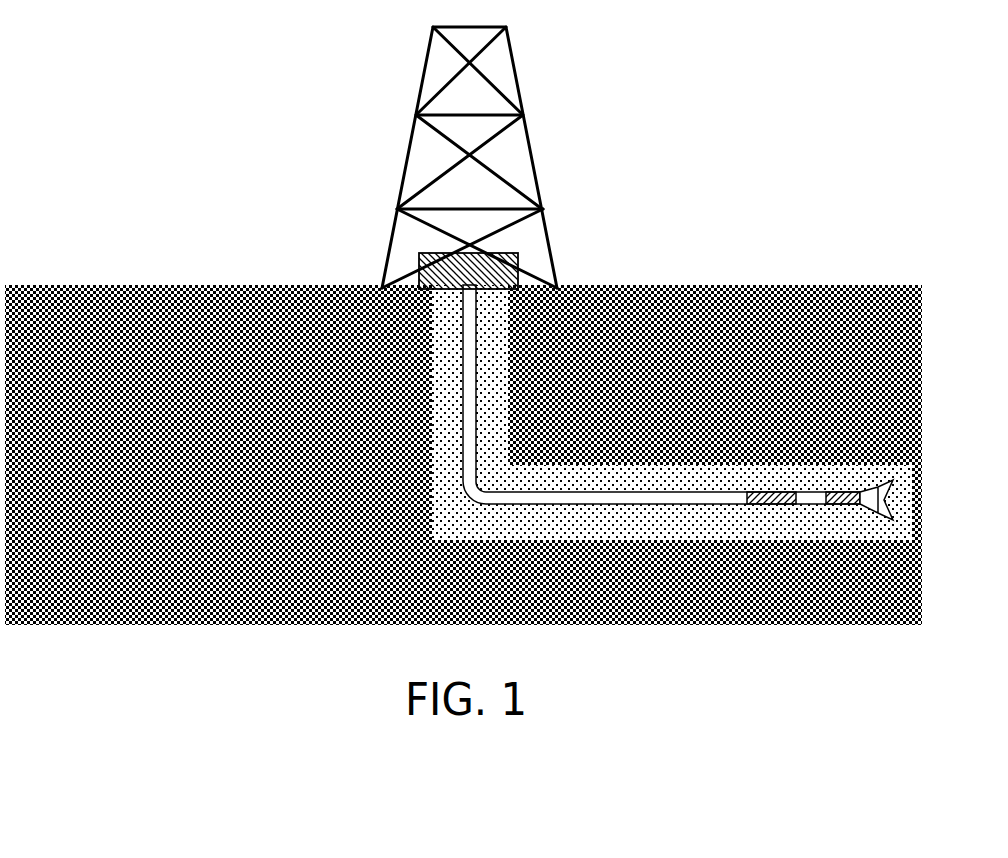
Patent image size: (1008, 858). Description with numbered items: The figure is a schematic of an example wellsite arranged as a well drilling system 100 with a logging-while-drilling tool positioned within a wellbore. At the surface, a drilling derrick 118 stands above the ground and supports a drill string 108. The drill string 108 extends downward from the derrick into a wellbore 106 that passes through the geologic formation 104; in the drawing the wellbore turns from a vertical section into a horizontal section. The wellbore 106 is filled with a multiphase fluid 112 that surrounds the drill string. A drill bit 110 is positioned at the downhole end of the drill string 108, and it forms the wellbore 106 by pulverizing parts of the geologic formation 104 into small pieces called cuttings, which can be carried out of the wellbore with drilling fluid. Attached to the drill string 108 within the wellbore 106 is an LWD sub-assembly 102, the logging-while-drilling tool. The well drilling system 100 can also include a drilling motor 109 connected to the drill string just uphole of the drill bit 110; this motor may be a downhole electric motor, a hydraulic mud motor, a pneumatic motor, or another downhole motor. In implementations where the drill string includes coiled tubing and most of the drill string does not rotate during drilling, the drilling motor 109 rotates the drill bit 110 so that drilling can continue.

The well drilling system 100 is at (463, 326).
The LWD sub-assembly 102 is at (770, 492).
The geologic formation 104 is at (202, 441).
The wellbore 106 is at (432, 352).
The drill string 108 is at (815, 506).
The drilling motor 109 is at (843, 507).
The drill bit 110 is at (864, 492).
The multiphase fluid 112 is at (492, 345).
The drilling derrick 118 is at (358, 167).